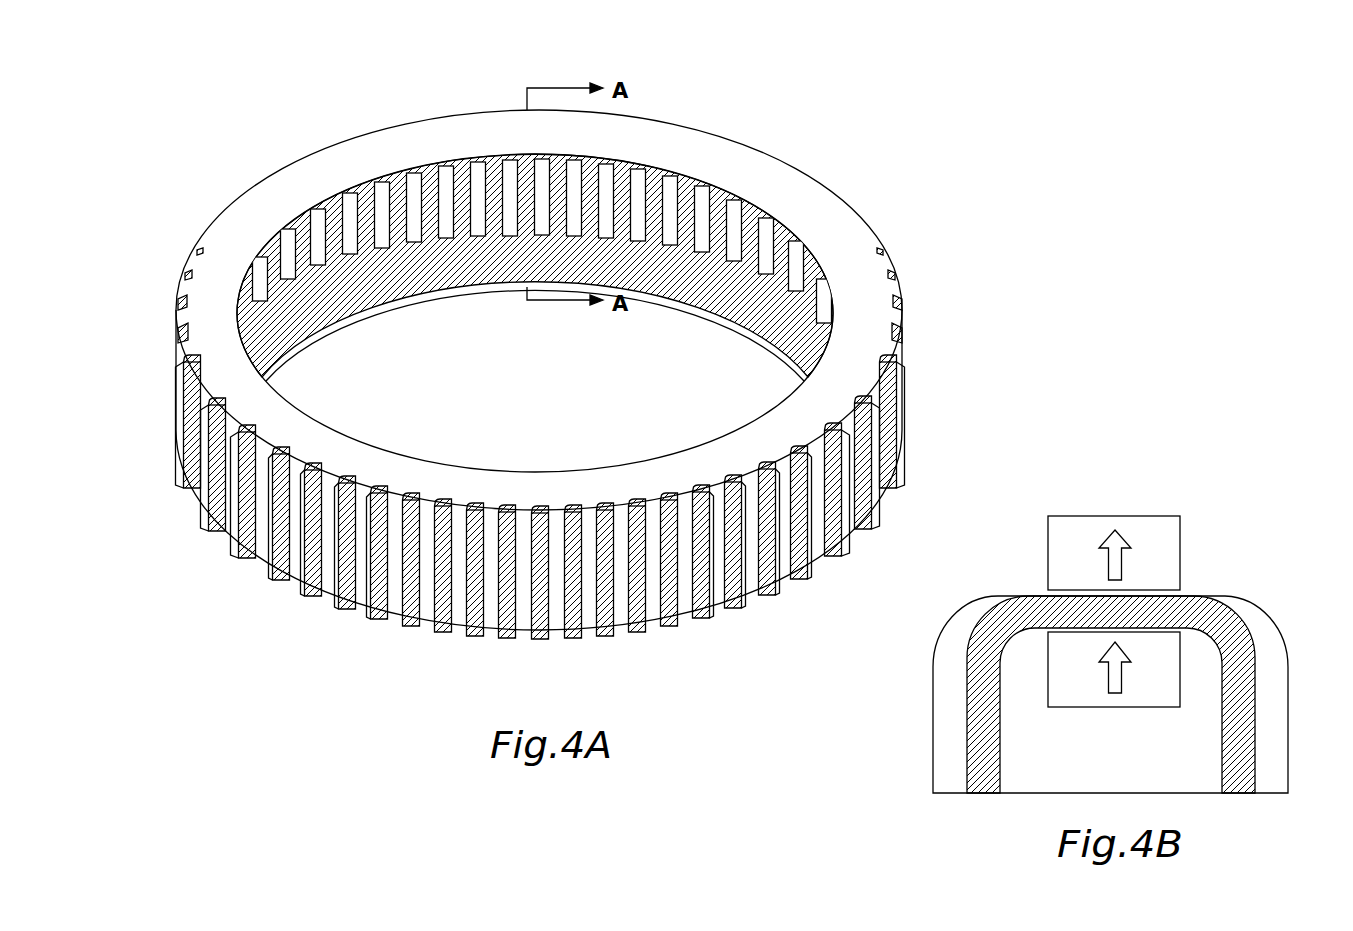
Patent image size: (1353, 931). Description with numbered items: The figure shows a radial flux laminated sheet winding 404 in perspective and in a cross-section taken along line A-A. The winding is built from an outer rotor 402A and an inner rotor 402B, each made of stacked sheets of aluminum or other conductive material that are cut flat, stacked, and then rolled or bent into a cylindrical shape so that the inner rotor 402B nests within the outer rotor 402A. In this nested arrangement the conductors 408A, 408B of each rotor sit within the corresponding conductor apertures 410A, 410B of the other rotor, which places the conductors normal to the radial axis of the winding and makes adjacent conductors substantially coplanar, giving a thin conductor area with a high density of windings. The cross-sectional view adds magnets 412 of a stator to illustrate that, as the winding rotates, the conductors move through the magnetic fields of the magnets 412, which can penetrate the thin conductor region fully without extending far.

In FIG. 4A, the outer rotor 402A is at (412, 130).
In FIG. 4B, the outer rotor 402A is at (942, 690).
In FIG. 4A, the inner rotor 402B is at (540, 448).
In FIG. 4B, the inner rotor 402B is at (983, 743).
In FIG. 4A, the radial flux laminated sheet winding 404 is at (552, 404).
In FIG. 4A, the conductor 408A is at (362, 590).
In FIG. 4A, the conductor 408B is at (266, 570).
In FIG. 4A, the conductor aperture 410A is at (323, 600).
In FIG. 4A, the conductor aperture 410B is at (427, 613).
In FIG. 4B, the magnets 412 is at (1165, 549).